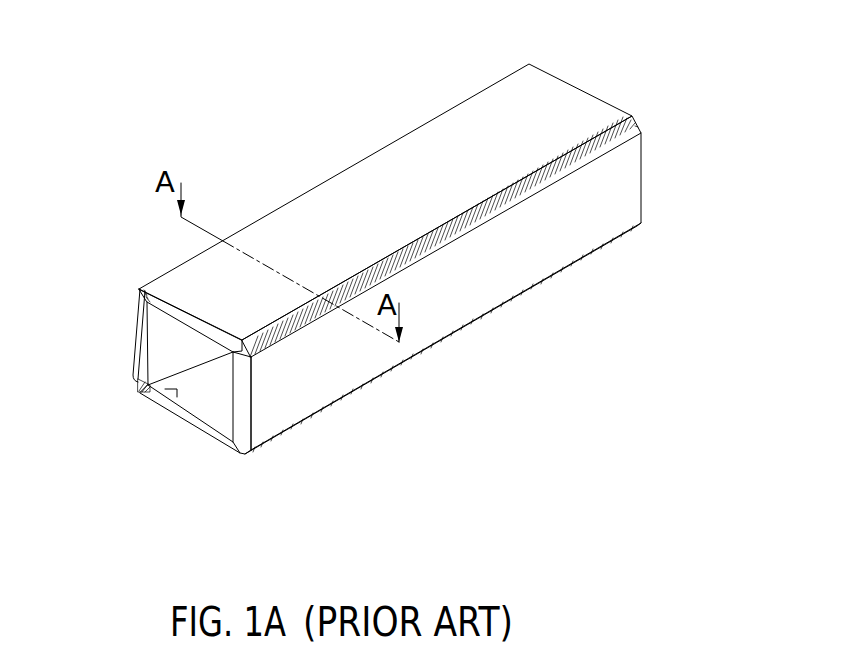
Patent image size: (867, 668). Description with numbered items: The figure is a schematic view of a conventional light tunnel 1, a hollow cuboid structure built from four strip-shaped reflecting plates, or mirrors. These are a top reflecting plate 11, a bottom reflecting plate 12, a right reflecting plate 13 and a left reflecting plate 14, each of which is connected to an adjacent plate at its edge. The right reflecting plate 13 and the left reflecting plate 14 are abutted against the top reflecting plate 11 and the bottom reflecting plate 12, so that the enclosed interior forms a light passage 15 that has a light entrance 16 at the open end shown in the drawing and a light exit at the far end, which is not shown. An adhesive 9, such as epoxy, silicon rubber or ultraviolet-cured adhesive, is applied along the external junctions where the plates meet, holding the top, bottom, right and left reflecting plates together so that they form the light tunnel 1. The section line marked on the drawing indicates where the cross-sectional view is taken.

The light tunnel 1 is at (86, 106).
The adhesive 9 is at (638, 121).
The top reflecting plate 11 is at (378, 175).
The bottom reflecting plate 12 is at (188, 420).
The right reflecting plate 13 is at (447, 290).
The left reflecting plate 14 is at (135, 335).
The light passage 15 is at (154, 389).
The light entrance 16 is at (218, 420).